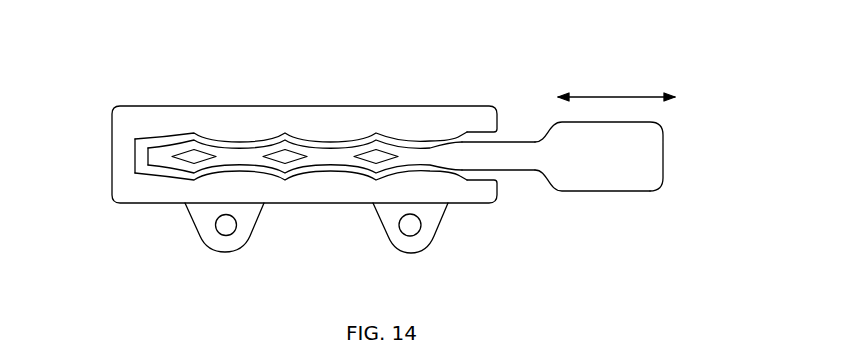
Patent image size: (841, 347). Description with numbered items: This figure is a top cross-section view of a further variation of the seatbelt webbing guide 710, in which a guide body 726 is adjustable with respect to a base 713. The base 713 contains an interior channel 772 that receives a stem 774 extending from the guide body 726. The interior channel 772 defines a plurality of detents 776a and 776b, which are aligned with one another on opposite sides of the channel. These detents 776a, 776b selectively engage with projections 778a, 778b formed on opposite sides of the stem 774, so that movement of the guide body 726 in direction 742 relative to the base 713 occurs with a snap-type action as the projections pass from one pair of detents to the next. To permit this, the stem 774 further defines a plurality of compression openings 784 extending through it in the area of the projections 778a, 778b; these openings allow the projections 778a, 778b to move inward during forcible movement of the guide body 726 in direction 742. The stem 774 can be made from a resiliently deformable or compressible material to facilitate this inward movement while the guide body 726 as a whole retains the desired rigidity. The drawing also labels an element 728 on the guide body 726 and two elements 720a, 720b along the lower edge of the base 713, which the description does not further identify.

The strap keeper assembly 710 is at (548, 46).
The base 713 is at (232, 123).
The stem 774 is at (271, 149).
The detent 776a is at (188, 140).
The detent 776b is at (192, 175).
The projection 778a is at (185, 147).
The projection 778b is at (188, 178).
The compression opening 784 is at (186, 148).
The interior channel 772 is at (499, 176).
The guide body 726 is at (574, 204).
The paddle edge 728 is at (618, 191).
The direction 742 is at (615, 93).
The first mounting tab 720a is at (416, 229).
The second mounting tab 720b is at (224, 231).